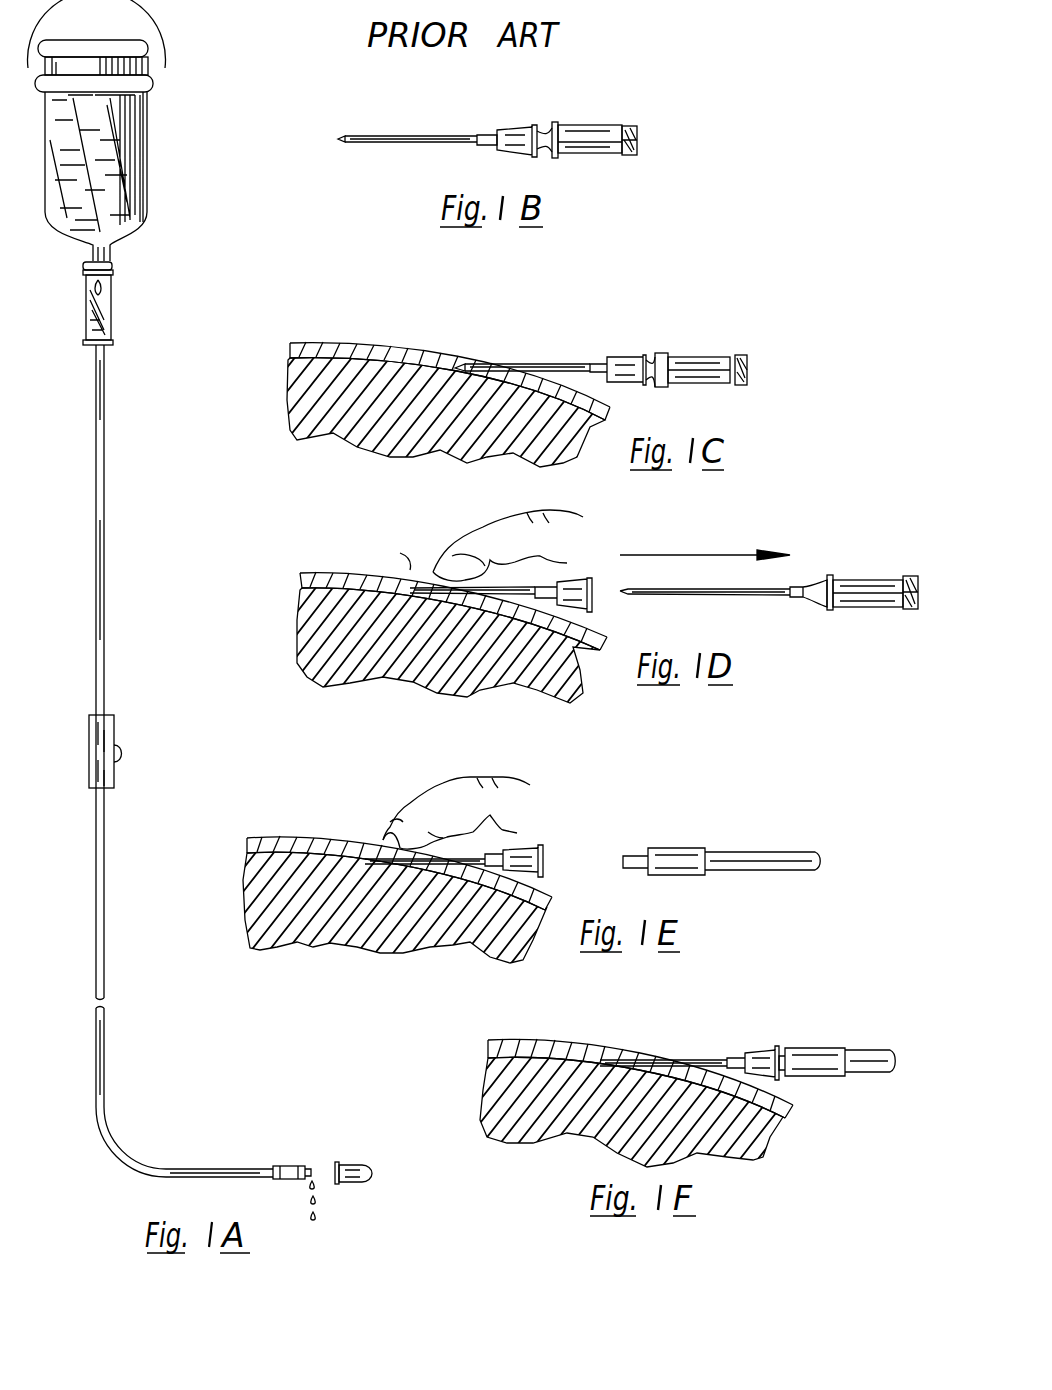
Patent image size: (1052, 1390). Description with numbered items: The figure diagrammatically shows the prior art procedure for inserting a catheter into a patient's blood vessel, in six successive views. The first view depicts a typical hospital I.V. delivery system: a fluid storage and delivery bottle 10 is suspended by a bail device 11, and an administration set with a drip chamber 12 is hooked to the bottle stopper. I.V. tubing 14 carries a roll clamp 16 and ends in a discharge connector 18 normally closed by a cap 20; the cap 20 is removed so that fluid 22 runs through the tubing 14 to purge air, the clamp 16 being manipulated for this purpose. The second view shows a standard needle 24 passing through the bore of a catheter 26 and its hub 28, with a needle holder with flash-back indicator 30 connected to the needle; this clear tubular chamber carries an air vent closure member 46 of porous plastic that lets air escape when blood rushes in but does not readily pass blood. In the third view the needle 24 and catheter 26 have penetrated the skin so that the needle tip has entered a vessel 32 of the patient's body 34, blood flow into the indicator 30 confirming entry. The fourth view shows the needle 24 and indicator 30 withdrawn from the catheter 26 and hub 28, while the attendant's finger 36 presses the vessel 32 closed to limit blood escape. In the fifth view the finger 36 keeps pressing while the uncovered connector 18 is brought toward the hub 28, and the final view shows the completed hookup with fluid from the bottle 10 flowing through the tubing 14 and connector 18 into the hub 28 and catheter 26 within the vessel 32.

In FIG. 1A, the fluid storage and delivery bottle 10 is at (145, 165).
In FIG. 1A, the bail device 11 is at (167, 50).
In FIG. 1A, the drip chamber 12 is at (115, 298).
In FIG. 1A, the I.V. tubing 14 is at (105, 415).
In FIG. 1E, the I.V. tubing 14 is at (752, 856).
In FIG. 1F, the I.V. tubing 14 is at (870, 1056).
In FIG. 1A, the roll clamp 16 is at (110, 741).
In FIG. 1A, the discharge connector 18 is at (283, 1166).
In FIG. 1E, the discharge connector 18 is at (680, 856).
In FIG. 1F, the discharge connector 18 is at (812, 1055).
In FIG. 1A, the cap 20 is at (360, 1165).
In FIG. 1A, the fluid 22 is at (316, 1222).
In FIG. 1B, the needle 24 is at (340, 135).
In FIG. 1C, the needle 24 is at (452, 364).
In FIG. 1D, the needle 24 is at (682, 598).
In FIG. 1B, the catheter 26 is at (408, 136).
In FIG. 1C, the catheter 26 is at (545, 362).
In FIG. 1D, the catheter 26 is at (420, 585).
In FIG. 1E, the catheter 26 is at (432, 868).
In FIG. 1F, the catheter 26 is at (605, 1060).
In FIG. 1B, the hub 28 is at (510, 128).
In FIG. 1C, the hub 28 is at (615, 357).
In FIG. 1D, the hub 28 is at (595, 605).
In FIG. 1E, the hub 28 is at (532, 848).
In FIG. 1F, the hub 28 is at (745, 1055).
In FIG. 1B, the needle holder with flash-back indicator 30 is at (595, 130).
In FIG. 1C, the needle holder with flash-back indicator 30 is at (685, 360).
In FIG. 1D, the needle holder with flash-back indicator 30 is at (867, 587).
In FIG. 1C, the vessel 32 is at (368, 358).
In FIG. 1D, the vessel 32 is at (320, 582).
In FIG. 1E, the vessel 32 is at (290, 852).
In FIG. 1F, the vessel 32 is at (500, 1050).
In FIG. 1C, the body 34 is at (345, 426).
In FIG. 1D, the body 34 is at (305, 625).
In FIG. 1E, the body 34 is at (305, 935).
In FIG. 1F, the body 34 is at (490, 1100).
In FIG. 1D, the finger 36 is at (480, 535).
In FIG. 1E, the finger 36 is at (425, 807).
In FIG. 1B, the air vent closure member 46 is at (669, 115).
In FIG. 1C, the air vent closure member 46 is at (748, 367).
In FIG. 1D, the air vent closure member 46 is at (915, 612).